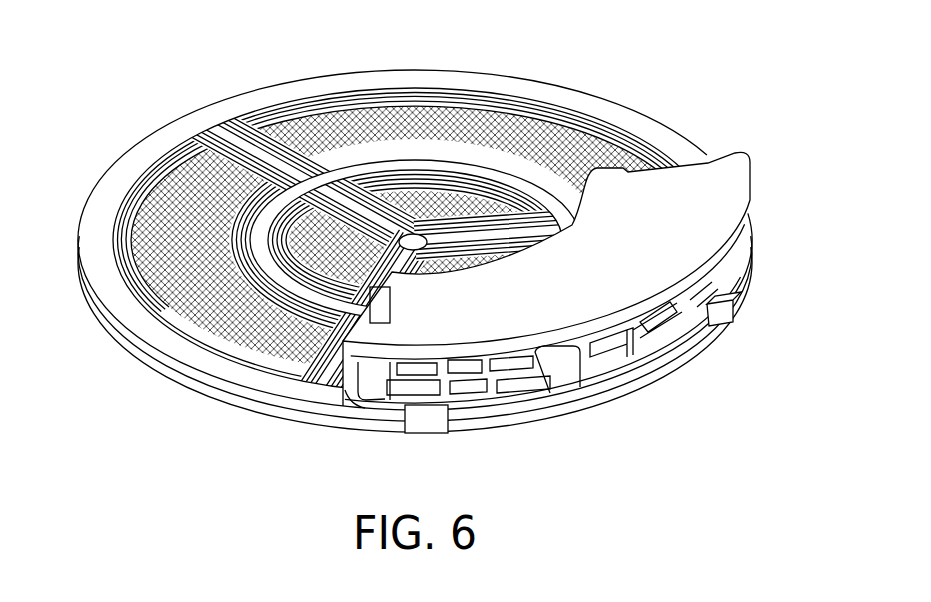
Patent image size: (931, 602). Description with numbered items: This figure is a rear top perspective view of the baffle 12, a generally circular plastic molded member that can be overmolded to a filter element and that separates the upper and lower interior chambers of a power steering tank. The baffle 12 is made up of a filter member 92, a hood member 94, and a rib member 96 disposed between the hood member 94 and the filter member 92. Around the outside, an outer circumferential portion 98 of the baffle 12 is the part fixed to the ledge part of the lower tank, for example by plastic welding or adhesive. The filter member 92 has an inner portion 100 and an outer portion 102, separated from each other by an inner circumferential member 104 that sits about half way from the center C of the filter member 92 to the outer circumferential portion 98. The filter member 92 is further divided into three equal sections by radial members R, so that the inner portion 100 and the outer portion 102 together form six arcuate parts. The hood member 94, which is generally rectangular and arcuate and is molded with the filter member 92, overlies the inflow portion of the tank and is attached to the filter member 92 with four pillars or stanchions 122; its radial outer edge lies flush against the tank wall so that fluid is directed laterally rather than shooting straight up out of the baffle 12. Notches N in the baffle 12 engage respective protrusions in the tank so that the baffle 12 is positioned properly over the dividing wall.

The baffle 12 is at (623, 107).
The filter member 92 is at (475, 72).
The hood member 94 is at (707, 209).
The rib member 96 is at (578, 368).
The outer circumferential portion 98 is at (747, 297).
The inner portion 100 is at (463, 207).
The outer portion 102 is at (397, 105).
The inner circumferential member 104 is at (353, 160).
The pillars or stanchions 122 is at (333, 397).
The center C is at (413, 236).
The radial members R is at (253, 157).
The notches N is at (427, 433).